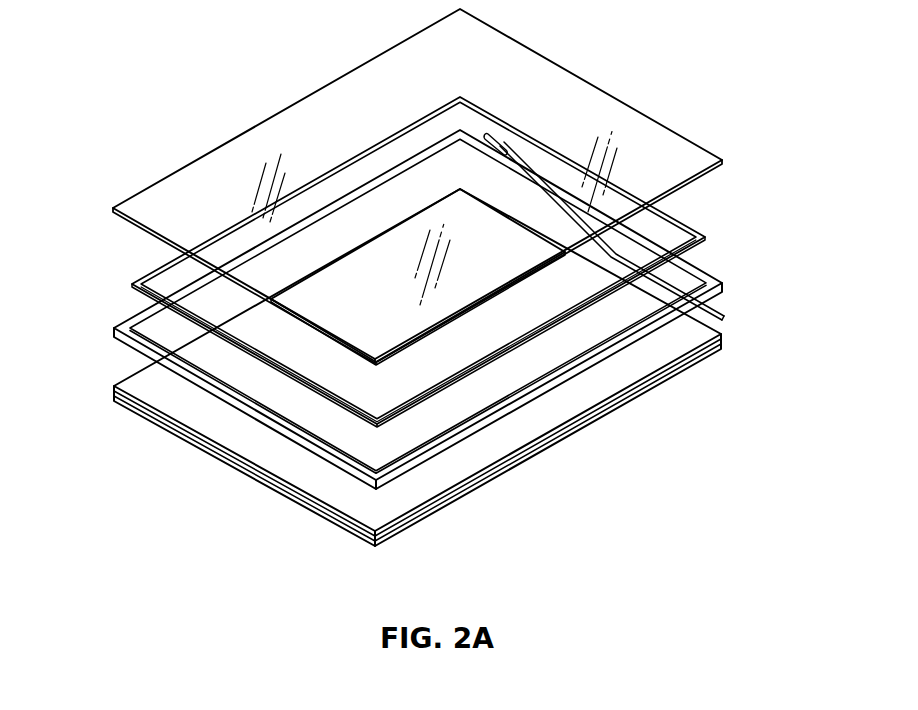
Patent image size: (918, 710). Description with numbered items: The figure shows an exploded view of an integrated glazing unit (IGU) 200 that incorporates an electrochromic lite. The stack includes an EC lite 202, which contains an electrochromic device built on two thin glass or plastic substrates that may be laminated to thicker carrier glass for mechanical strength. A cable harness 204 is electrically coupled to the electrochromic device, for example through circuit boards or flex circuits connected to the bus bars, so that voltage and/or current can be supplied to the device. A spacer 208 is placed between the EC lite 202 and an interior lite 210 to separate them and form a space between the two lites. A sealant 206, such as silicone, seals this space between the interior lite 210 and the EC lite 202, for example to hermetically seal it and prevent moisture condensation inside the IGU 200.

The integrated glazing unit (IGU) 200 is at (150, 42).
The EC lite 202 is at (540, 448).
The cable harness 204 is at (725, 323).
The sealant 206 is at (590, 362).
The spacer 208 is at (703, 248).
The interior lite 210 is at (713, 171).